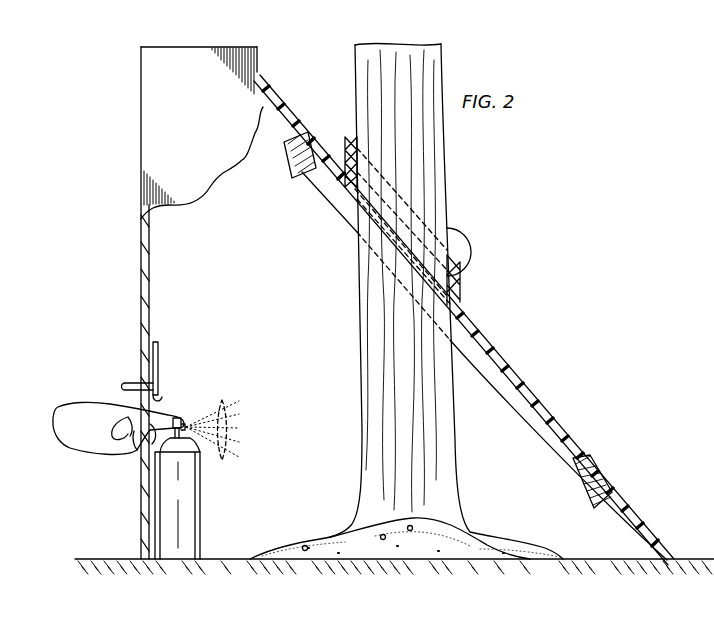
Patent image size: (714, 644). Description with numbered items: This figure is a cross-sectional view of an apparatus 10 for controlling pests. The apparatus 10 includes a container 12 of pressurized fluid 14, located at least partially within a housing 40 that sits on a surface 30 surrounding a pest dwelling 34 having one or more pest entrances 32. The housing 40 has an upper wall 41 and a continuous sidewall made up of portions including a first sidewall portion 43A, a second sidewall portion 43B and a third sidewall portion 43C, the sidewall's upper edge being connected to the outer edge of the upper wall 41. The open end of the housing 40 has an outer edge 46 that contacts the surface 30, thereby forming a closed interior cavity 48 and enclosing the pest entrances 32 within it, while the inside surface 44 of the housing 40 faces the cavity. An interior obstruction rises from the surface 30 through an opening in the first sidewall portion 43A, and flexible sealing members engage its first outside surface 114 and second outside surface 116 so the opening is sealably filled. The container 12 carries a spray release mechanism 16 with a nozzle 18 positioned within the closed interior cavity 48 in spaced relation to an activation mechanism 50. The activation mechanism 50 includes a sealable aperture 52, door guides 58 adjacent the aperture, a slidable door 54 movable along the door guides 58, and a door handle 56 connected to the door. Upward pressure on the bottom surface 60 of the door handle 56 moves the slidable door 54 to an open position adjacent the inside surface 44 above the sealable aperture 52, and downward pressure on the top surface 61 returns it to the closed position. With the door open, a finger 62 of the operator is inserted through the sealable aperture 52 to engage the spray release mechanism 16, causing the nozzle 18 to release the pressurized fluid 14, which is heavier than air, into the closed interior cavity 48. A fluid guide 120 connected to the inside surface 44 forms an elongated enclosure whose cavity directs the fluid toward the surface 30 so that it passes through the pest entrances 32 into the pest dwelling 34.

The apparatus 10 is at (76, 207).
The container 12 is at (207, 455).
The pressurized fluid 14 is at (222, 400).
The spray release mechanism 16 is at (200, 446).
The nozzle 18 is at (184, 421).
The surface 30 is at (596, 558).
The pest entrances 32 is at (384, 534).
The pest dwelling 34 is at (302, 541).
The housing 40 is at (171, 111).
The upper wall 41 is at (190, 46).
The first sidewall portion 43A is at (259, 64).
The second sidewall portion 43B is at (143, 143).
The third sidewall portion 43C is at (140, 265).
The inside surface 44 is at (229, 186).
The outer edge 46 is at (640, 562).
The closed interior cavity 48 is at (240, 541).
The activation mechanism 50 is at (134, 340).
The sealable aperture 52 is at (165, 452).
The slidable door 54 is at (159, 352).
The door handle 56 is at (130, 383).
The door guides 58 is at (162, 393).
The bottom surface 60 is at (123, 388).
The top surface 61 is at (141, 382).
The finger 62 is at (134, 453).
The first outside surface 114 is at (447, 224).
The second outside surface 116 is at (353, 142).
The fluid guide 120 is at (323, 194).